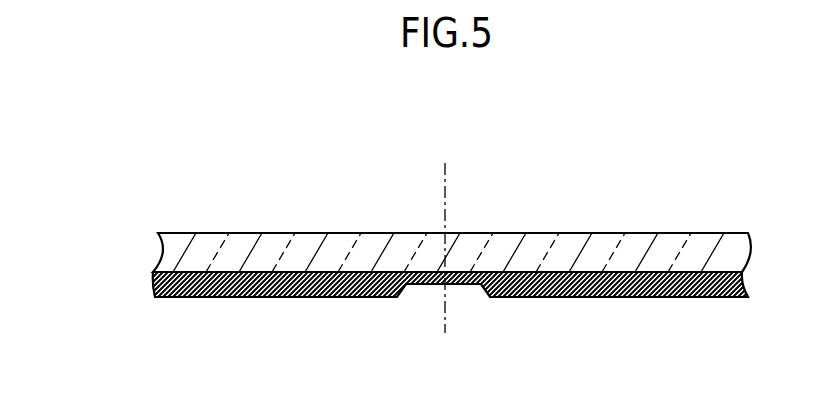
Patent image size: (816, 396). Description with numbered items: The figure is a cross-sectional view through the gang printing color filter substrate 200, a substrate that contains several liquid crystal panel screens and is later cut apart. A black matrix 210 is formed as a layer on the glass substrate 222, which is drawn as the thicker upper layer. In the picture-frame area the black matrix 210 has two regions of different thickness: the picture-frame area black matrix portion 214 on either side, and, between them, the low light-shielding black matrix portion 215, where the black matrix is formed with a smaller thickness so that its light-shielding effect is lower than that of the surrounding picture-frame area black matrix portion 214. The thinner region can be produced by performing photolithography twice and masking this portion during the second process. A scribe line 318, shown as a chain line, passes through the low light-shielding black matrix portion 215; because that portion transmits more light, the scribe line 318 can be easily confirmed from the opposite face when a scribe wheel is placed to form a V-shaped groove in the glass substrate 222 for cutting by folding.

The gang printing color filter substrate 200 is at (615, 125).
The black matrix 210 is at (132, 288).
The picture-frame area black matrix portion 214 is at (273, 288).
The low light-shielding black matrix portion 215 is at (423, 280).
The glass substrate 222 is at (355, 252).
The scribe line 318 is at (446, 168).